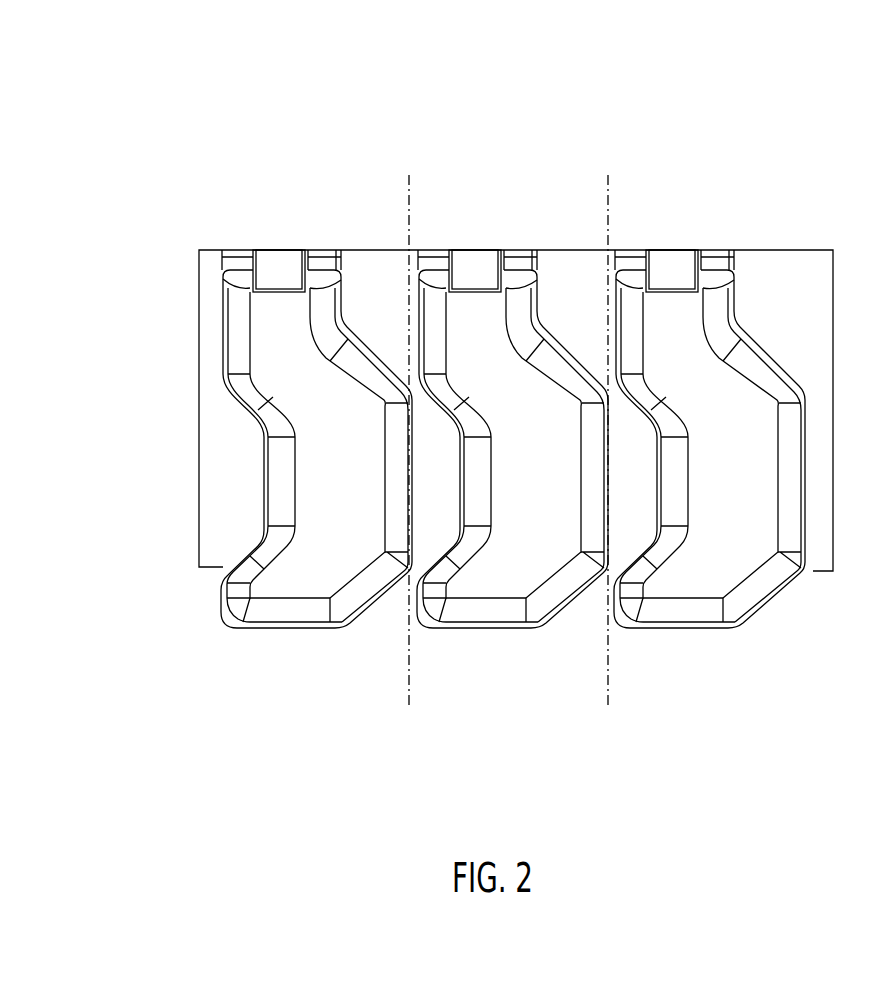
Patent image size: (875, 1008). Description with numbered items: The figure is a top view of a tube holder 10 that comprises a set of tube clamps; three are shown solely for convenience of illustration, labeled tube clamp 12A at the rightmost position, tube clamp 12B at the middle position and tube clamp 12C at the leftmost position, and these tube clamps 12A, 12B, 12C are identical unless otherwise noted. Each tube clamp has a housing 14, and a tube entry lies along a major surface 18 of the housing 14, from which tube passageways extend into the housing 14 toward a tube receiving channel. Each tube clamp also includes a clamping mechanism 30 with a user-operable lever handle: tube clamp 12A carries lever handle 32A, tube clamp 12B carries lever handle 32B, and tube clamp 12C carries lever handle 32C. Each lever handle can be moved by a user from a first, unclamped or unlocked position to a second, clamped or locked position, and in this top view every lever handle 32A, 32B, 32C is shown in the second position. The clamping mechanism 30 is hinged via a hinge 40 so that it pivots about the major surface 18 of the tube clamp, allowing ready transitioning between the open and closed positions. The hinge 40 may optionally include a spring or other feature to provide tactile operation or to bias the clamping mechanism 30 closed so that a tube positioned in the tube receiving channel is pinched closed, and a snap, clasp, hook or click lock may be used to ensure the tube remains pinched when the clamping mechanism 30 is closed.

The tube holder 10 is at (56, 93).
The tube clamp 12A is at (767, 250).
The tube clamp 12B is at (572, 250).
The tube clamp 12C is at (371, 250).
The housing 14 is at (197, 287).
The major surface 18 is at (801, 302).
The clamping mechanism 30 is at (238, 645).
The lever handle 32A is at (690, 583).
The lever handle 32B is at (500, 580).
The lever handle 32C is at (303, 581).
The hinge 40 is at (278, 263).